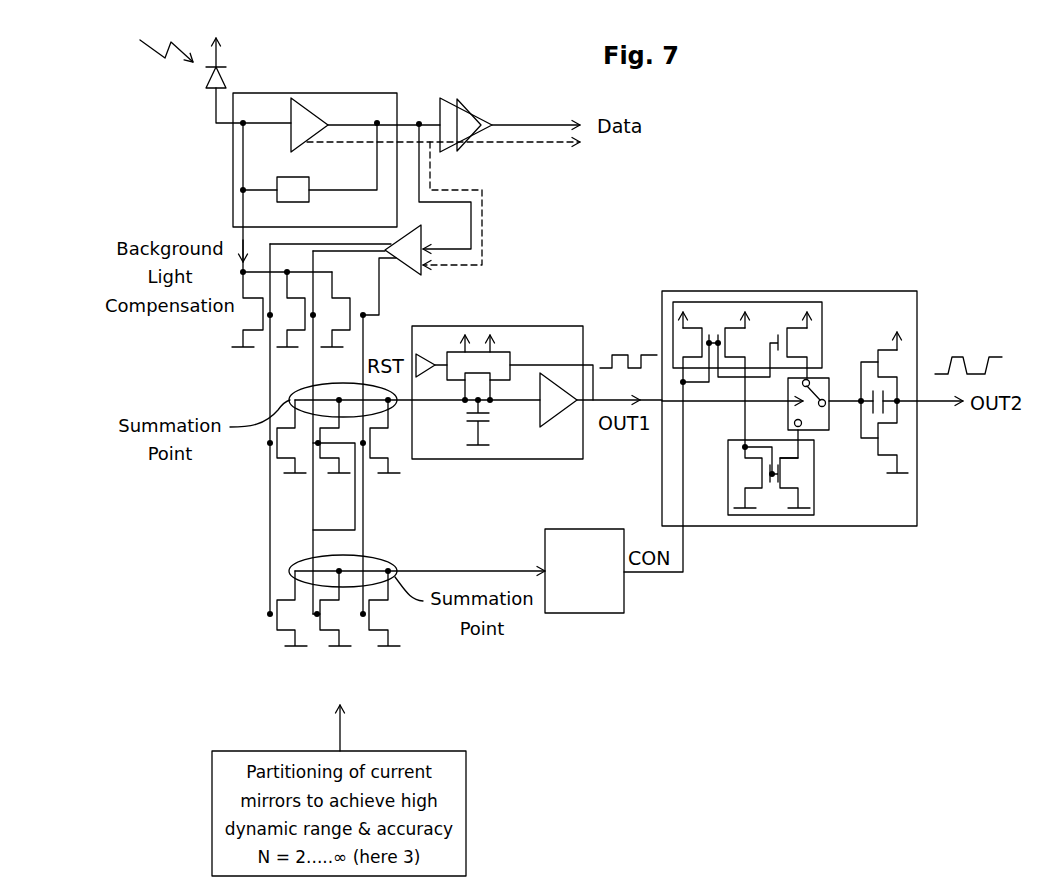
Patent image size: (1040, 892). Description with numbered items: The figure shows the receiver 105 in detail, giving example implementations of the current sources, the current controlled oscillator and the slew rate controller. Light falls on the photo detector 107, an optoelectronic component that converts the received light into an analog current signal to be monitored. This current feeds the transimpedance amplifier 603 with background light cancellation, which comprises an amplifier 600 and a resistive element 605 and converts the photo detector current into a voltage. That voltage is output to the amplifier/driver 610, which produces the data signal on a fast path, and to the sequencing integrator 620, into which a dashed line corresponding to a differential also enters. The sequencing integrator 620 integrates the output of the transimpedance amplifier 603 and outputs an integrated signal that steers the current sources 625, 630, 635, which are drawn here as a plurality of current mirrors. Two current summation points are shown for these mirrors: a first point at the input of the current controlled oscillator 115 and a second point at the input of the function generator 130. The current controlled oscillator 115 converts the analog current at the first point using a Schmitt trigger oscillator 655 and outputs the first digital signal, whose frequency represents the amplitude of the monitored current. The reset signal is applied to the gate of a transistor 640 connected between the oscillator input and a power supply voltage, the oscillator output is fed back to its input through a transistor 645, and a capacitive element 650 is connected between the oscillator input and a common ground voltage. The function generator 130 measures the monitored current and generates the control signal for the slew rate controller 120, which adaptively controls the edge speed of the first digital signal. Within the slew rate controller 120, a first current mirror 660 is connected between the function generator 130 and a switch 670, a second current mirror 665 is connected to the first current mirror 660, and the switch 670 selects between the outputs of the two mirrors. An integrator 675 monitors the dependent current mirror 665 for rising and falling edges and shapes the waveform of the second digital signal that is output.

The receiver 105 is at (794, 159).
The photo detector 107 is at (212, 92).
The current controlled oscillator 115 is at (583, 340).
The slew rate controller 120 is at (917, 312).
The function generator 130 is at (624, 607).
The amplifier 600 is at (311, 110).
The transimpedance amplifier 603 is at (396, 93).
The resistive element 605 is at (310, 186).
The amplifier/driver 610 is at (470, 100).
The sequencing integrator 620 is at (423, 240).
The current source 625 is at (222, 338).
The current source 630 is at (283, 358).
The current source 635 is at (332, 358).
The transistor 640 is at (453, 342).
The transistor 645 is at (519, 342).
The capacitive element 650 is at (497, 422).
The Schmitt trigger oscillator 655 is at (560, 420).
The first current mirror 660 is at (767, 302).
The second current mirror 665 is at (767, 527).
The switch 670 is at (820, 431).
The integrator 675 is at (868, 335).